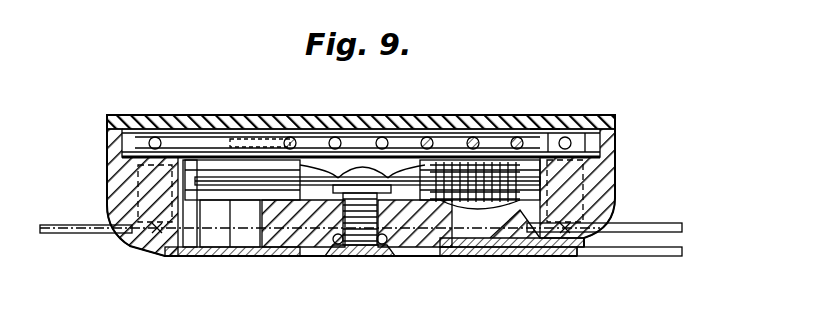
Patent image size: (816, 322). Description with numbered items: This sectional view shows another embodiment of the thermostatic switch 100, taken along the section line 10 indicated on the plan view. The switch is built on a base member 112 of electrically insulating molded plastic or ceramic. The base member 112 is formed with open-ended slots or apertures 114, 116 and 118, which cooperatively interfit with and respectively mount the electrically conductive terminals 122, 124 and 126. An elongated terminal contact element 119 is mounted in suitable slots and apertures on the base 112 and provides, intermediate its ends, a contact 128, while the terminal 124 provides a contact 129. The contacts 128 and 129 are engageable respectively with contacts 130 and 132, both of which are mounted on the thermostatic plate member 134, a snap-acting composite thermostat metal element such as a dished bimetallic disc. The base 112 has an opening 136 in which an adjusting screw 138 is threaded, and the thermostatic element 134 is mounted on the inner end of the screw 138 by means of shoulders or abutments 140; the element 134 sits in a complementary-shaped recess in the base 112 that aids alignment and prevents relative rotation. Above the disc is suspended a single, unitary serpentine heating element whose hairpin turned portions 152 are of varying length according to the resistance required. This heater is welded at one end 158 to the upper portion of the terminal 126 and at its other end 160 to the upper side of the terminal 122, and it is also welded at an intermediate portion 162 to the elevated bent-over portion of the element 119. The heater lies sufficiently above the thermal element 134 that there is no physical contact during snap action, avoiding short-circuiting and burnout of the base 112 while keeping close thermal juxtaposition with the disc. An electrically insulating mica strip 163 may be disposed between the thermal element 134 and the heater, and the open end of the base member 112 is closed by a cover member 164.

The section line 10- 10 is at (262, 86).
The thermostatic switch 100 is at (596, 85).
The base member 112 is at (605, 172).
The slot or aperture 114 is at (600, 185).
The slot or aperture 116 is at (508, 250).
The slot or aperture 118 is at (140, 182).
The terminal contact element 119 is at (212, 258).
The terminal 122 is at (660, 212).
The terminal 124 is at (648, 250).
The terminal 126 is at (88, 225).
The contact 128 is at (303, 223).
The contact 129 is at (452, 225).
The contact 130 is at (282, 205).
The contact 132 is at (445, 210).
The thermostatic plate member 134 is at (425, 168).
The opening 136 is at (348, 250).
The adjusting screw 138 is at (390, 252).
The shoulder or abutment 140 is at (405, 118).
The hairpin turned portion 152 is at (200, 138).
The heater element end 158 is at (155, 137).
The heater element end 160 is at (577, 128).
The heater element intermediate portion 162 is at (252, 140).
The electrically insulating strip 163 is at (543, 128).
The cover member 164 is at (480, 128).